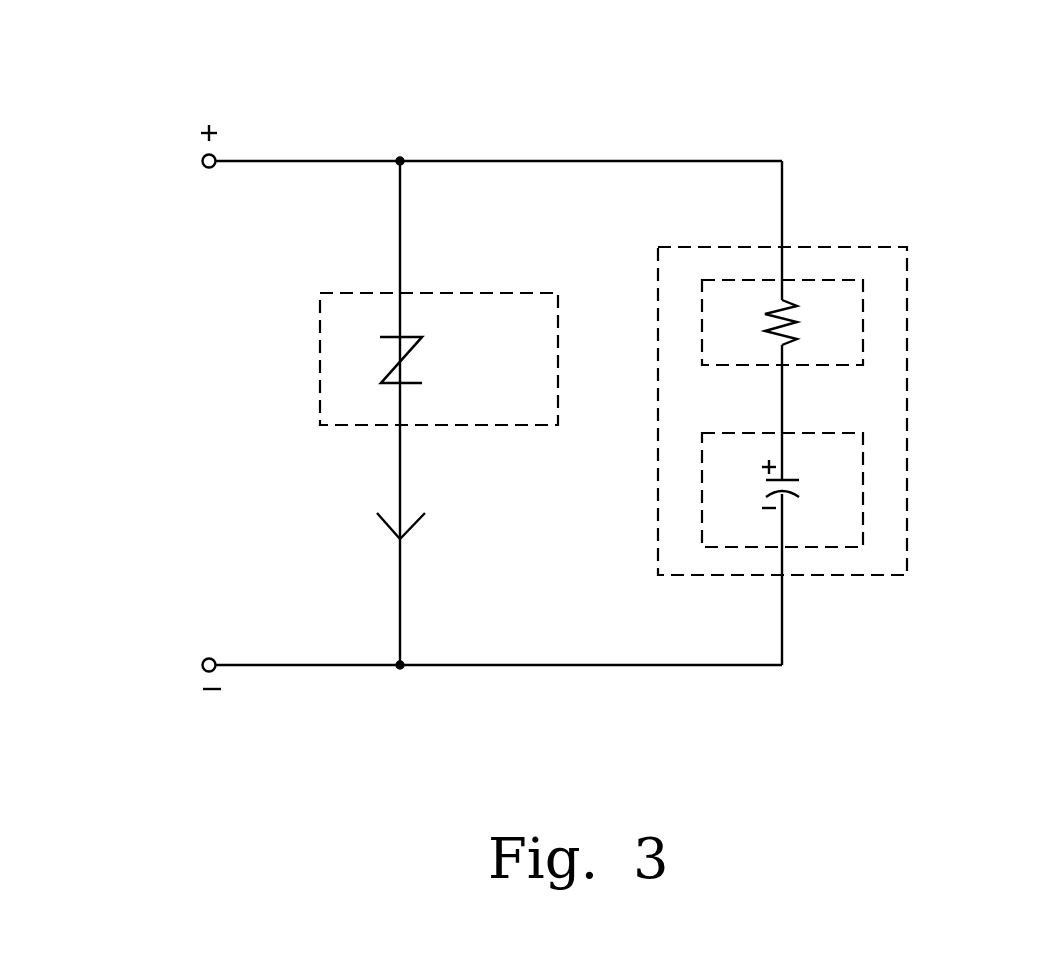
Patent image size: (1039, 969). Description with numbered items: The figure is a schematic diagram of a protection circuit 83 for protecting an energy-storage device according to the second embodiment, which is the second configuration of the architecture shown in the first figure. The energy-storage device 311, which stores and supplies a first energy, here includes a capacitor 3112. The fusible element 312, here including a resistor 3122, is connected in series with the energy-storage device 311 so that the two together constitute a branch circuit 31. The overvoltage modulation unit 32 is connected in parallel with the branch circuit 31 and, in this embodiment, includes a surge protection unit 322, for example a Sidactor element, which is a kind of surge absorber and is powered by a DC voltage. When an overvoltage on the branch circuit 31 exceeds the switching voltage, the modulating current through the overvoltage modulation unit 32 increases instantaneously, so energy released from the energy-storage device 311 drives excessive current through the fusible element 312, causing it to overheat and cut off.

The protection circuit 83 is at (684, 60).
The branch circuit 31 is at (828, 247).
The energy-storage device 311 is at (863, 463).
The capacitor 3112 is at (798, 490).
The fusible element 312 is at (863, 305).
The resistor 3122 is at (797, 330).
The overvoltage modulation unit 32 is at (320, 345).
The surge protection unit 322 is at (415, 328).